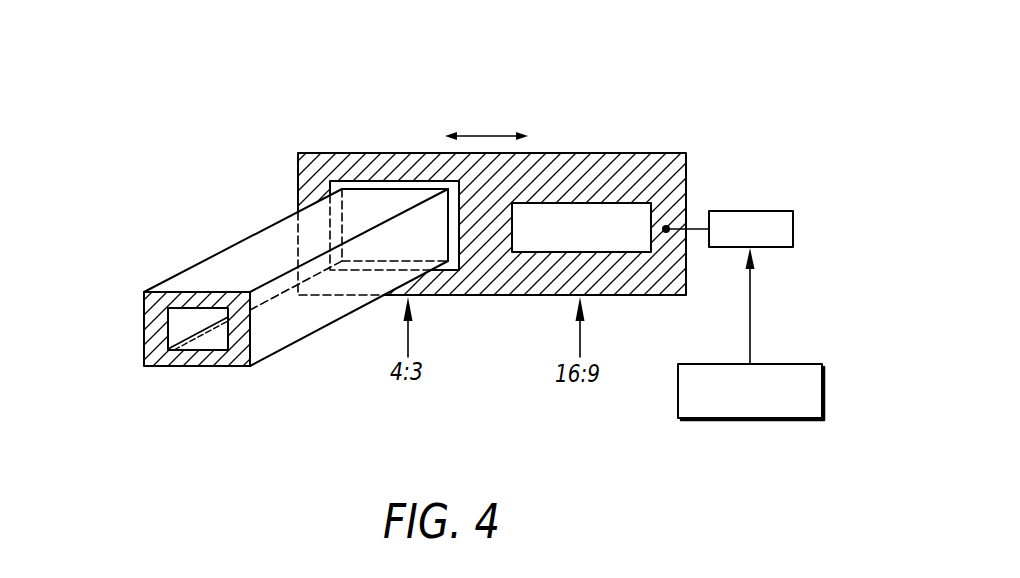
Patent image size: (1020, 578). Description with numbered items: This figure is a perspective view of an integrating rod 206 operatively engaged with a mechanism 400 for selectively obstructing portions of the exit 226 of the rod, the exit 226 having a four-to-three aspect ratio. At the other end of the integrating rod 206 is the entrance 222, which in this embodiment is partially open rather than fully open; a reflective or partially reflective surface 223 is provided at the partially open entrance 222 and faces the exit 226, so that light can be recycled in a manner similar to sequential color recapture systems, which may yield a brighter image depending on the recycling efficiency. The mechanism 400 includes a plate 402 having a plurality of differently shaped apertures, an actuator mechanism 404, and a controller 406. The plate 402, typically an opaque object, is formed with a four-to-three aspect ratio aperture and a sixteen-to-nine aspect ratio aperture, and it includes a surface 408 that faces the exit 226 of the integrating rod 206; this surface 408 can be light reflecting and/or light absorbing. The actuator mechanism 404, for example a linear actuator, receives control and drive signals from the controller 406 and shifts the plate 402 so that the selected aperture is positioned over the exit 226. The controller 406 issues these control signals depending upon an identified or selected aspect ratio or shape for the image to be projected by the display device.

The mechanism 400 is at (740, 94).
The plate 402 is at (612, 153).
The actuator mechanism 404 is at (775, 211).
The controller 406 is at (783, 363).
The surface 408 is at (548, 172).
The integrating rod 206 is at (255, 288).
The entrance 222 is at (177, 330).
The reflective or partially reflective surface 223 is at (211, 352).
The exit 226 is at (396, 190).